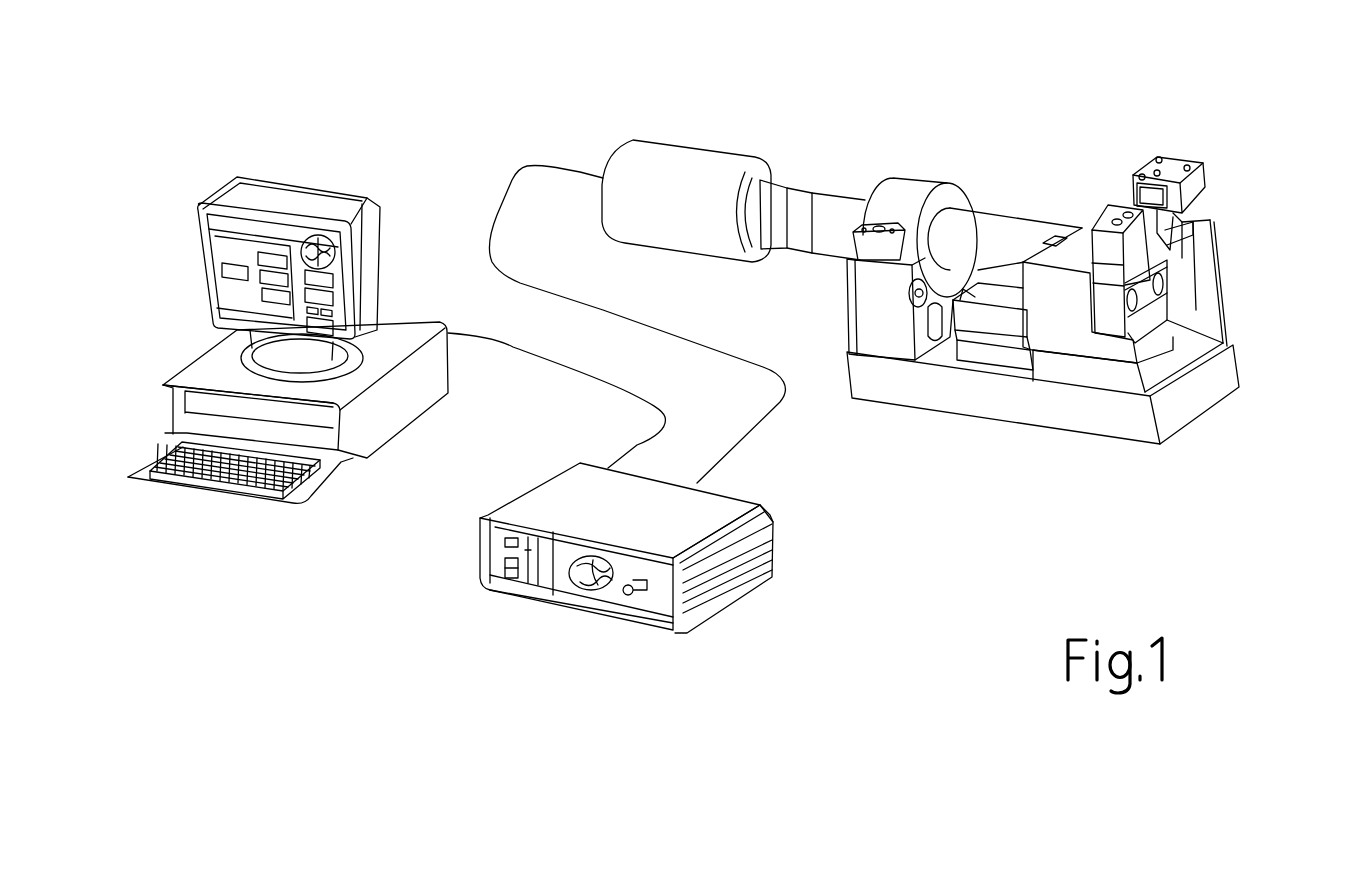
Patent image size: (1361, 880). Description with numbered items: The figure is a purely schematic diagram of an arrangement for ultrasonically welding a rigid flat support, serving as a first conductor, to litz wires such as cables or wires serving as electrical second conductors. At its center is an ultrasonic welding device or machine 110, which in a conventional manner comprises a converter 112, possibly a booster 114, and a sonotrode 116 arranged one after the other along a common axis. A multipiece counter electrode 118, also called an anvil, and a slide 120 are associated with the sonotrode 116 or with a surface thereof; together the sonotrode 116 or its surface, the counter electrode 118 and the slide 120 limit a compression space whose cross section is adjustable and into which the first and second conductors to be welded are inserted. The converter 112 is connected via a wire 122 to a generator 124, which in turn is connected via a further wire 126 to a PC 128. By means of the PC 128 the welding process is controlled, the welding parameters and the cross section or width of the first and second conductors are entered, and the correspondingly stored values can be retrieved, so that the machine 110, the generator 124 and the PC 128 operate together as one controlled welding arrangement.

The ultrasonic welding device 110 is at (829, 128).
The converter 112 is at (672, 160).
The booster 114 is at (923, 182).
The sonotrode 116 is at (1032, 228).
The counter electrode 118 is at (1200, 197).
The slide 120 is at (1193, 257).
The wire 122 is at (763, 412).
The generator 124 is at (507, 550).
The wire 126 is at (518, 348).
The PC 128 is at (203, 372).